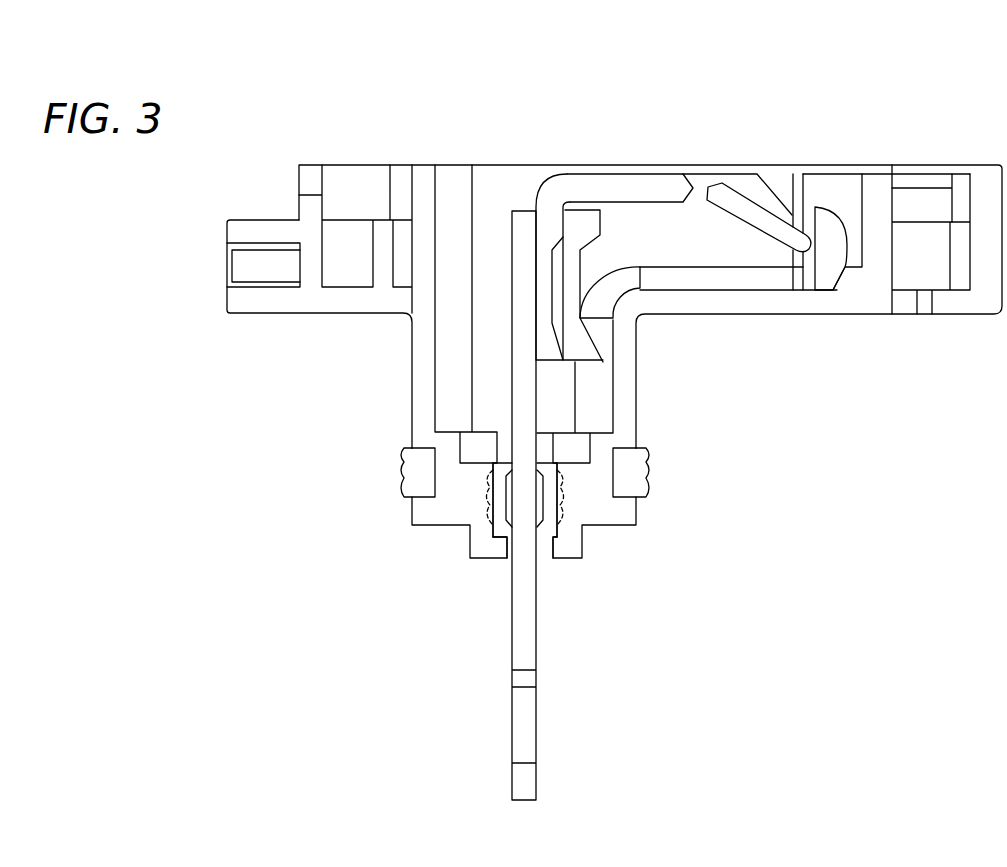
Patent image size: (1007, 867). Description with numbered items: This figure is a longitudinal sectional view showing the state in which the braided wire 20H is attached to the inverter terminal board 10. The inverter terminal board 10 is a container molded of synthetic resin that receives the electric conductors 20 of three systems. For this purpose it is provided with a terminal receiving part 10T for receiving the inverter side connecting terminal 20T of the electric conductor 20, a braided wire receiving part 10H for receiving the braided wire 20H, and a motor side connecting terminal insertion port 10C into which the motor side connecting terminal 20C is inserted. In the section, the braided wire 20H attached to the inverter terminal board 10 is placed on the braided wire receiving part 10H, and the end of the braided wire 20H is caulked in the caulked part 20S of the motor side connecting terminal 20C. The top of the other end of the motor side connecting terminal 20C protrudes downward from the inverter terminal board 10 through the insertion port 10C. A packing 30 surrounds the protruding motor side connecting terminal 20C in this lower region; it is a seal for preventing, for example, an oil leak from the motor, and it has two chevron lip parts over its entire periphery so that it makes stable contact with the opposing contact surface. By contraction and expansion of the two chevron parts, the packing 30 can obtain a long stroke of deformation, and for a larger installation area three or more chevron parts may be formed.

The inverter terminal board 10 is at (984, 165).
The braided wire receiving part 10H is at (655, 215).
The terminal receiving part 10T is at (920, 245).
The motor side connecting terminal insertion port 10C is at (507, 548).
The electric conductor 20 is at (672, 180).
The braided wire 20H is at (610, 182).
The caulked part 20S is at (583, 222).
The inverter side connecting terminal 20T is at (922, 203).
The motor side connecting terminal 20C is at (530, 630).
The packing 30 is at (550, 498).